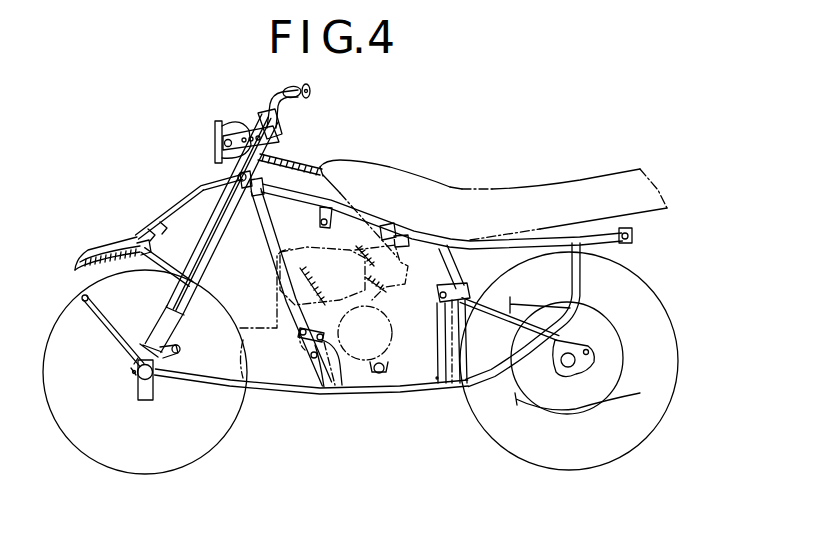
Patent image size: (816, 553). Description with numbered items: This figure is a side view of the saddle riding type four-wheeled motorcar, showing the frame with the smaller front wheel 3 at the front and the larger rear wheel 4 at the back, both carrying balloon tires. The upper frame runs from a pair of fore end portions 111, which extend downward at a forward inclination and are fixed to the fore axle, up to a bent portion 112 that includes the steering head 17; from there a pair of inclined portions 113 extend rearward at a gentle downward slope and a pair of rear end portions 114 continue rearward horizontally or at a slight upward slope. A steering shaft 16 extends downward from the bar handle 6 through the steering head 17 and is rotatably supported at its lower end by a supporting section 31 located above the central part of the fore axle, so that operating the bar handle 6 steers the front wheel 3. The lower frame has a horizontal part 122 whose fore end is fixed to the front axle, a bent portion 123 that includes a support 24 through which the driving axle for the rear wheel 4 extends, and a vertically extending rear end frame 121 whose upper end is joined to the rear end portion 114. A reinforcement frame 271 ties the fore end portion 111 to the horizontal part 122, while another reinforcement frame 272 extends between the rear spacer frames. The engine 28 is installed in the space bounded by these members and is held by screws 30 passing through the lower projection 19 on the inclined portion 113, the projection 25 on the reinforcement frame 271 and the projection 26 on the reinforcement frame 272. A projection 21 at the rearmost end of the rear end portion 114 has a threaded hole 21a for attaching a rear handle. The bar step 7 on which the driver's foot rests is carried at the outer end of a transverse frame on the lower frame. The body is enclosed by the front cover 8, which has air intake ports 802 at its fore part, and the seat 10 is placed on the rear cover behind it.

The front wheel 3 is at (187, 466).
The rear wheel 4 is at (633, 451).
The bar handle 6 is at (296, 82).
The bar step 7 is at (383, 362).
The front cover 8 is at (283, 163).
The seat 10 is at (578, 193).
The steering shaft 16 is at (210, 186).
The steering head 17 is at (222, 177).
The lower projection 19 is at (320, 210).
The projection 21 is at (627, 223).
The threaded hole 21a is at (636, 238).
The support 24 is at (640, 393).
The projection 25 is at (322, 372).
The projection 26 is at (453, 400).
The engine 28 is at (387, 380).
The screw 30 is at (328, 360).
The supporting section 31 is at (143, 347).
The fore end portion 111 is at (182, 313).
The bent portion 112 is at (353, 208).
The inclined portion 113 is at (353, 207).
The rear end portion 114 is at (542, 237).
The rear end frame 121 is at (582, 276).
The horizontal part 122 is at (253, 394).
The bent portion 123 is at (673, 333).
The reinforcement frame 271 is at (276, 270).
The reinforcement frame 272 is at (446, 260).
The air intake port 802 is at (160, 217).